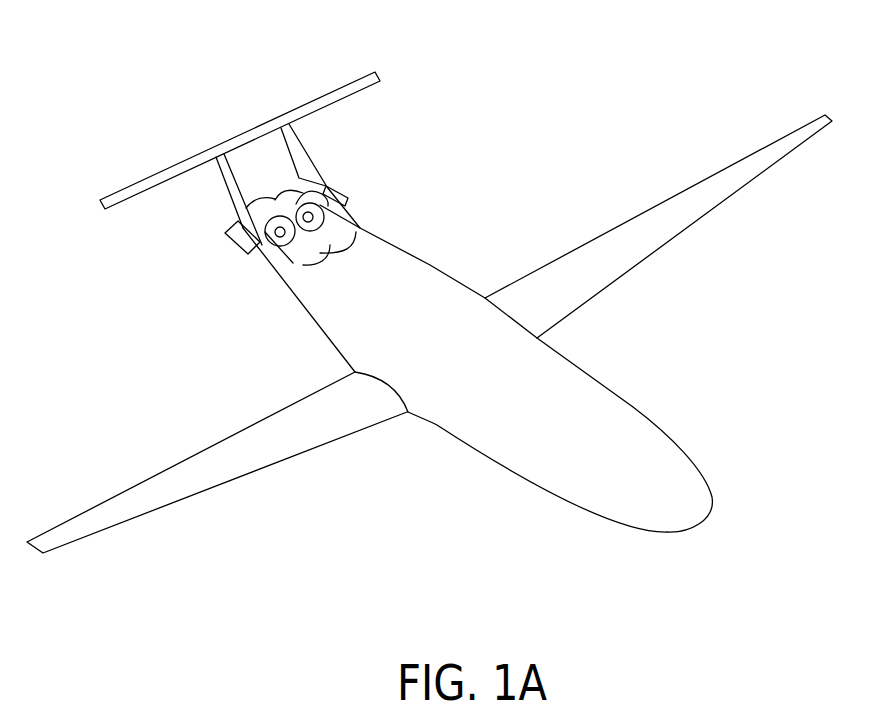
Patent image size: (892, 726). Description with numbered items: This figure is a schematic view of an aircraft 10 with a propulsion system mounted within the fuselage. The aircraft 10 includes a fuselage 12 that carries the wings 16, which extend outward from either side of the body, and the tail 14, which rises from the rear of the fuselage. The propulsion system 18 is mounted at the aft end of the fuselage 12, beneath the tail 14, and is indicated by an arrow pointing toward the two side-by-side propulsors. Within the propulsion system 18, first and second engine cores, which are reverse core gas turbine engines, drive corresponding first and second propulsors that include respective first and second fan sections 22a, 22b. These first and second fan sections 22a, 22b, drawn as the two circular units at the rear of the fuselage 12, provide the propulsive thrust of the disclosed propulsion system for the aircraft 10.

The aircraft 10 is at (576, 113).
The fuselage 12 is at (602, 422).
The tail 14 is at (290, 105).
The wings 16 is at (637, 253).
The propulsion system 18 is at (200, 262).
The first fan section 22a is at (312, 188).
The second fan section 22b is at (260, 245).